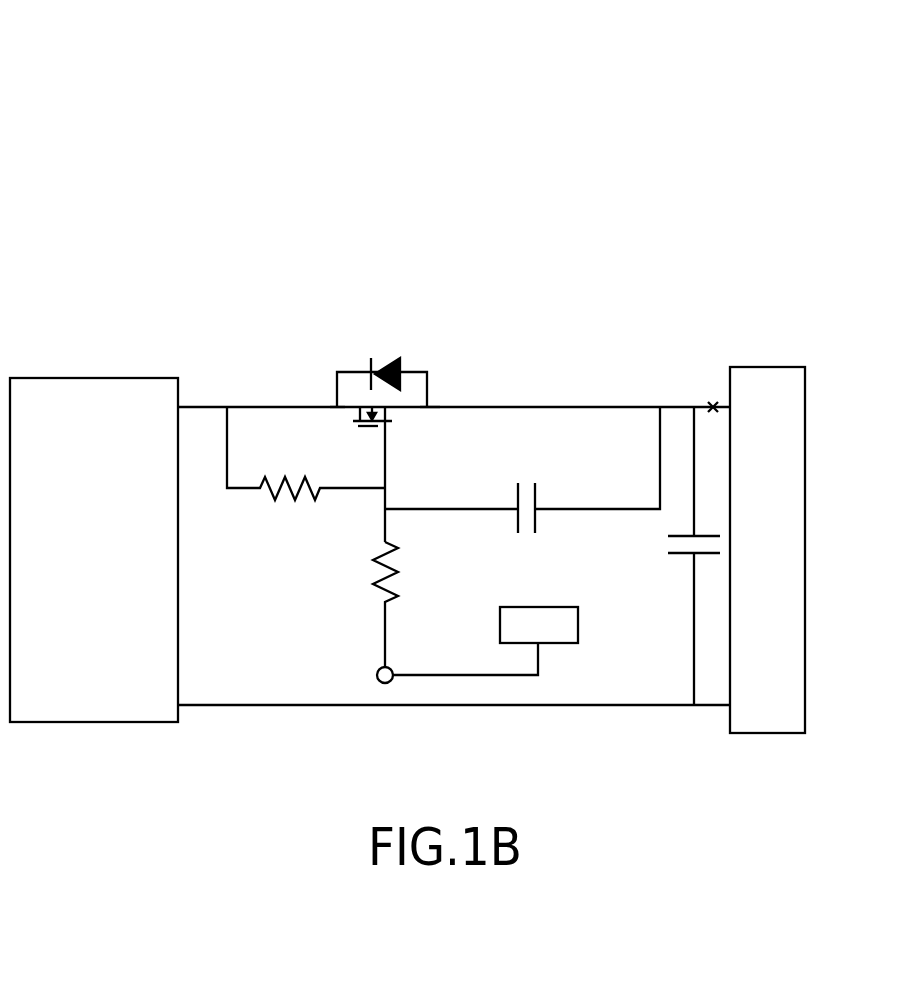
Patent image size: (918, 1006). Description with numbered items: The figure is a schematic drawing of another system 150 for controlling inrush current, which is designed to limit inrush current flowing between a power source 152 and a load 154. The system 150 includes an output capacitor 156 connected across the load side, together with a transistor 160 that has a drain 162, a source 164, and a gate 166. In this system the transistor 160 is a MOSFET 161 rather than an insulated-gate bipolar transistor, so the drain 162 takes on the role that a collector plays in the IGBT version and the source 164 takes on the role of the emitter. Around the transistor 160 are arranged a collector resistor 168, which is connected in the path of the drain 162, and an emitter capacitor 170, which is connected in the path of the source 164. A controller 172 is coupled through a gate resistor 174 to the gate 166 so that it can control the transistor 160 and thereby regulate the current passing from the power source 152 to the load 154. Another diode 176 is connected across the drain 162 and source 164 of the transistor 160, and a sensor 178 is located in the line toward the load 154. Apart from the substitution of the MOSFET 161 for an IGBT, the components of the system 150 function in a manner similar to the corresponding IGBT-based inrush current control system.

The system 150 is at (91, 99).
The power source 152 is at (85, 377).
The load 154 is at (804, 367).
The output capacitor 156 is at (675, 556).
The transistor 160 is at (350, 436).
The MOSFET 161 is at (360, 447).
The drain 162 is at (335, 405).
The source 164 is at (433, 403).
The gate 166 is at (376, 428).
The collector resistor 168 is at (273, 491).
The emitter capacitor 170 is at (537, 528).
The controller 172 is at (502, 607).
The gate resistor 174 is at (393, 590).
The diode 176 is at (382, 360).
The sensor 178 is at (712, 398).